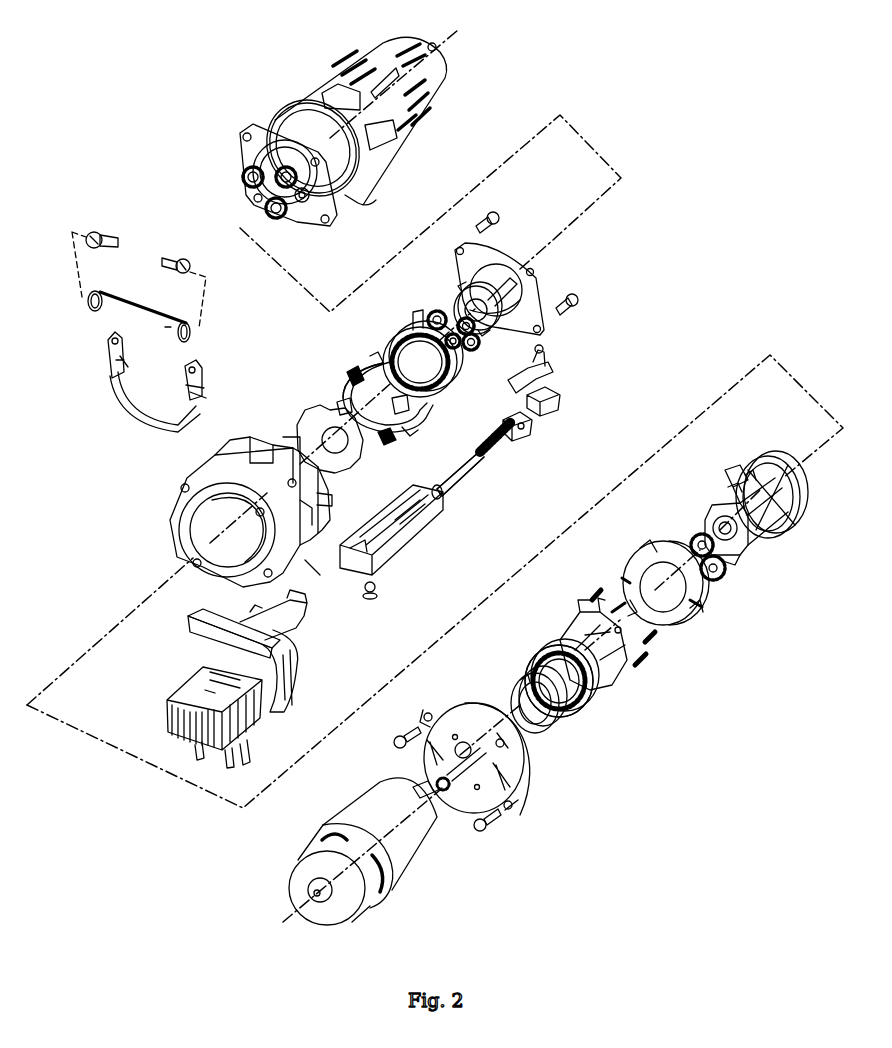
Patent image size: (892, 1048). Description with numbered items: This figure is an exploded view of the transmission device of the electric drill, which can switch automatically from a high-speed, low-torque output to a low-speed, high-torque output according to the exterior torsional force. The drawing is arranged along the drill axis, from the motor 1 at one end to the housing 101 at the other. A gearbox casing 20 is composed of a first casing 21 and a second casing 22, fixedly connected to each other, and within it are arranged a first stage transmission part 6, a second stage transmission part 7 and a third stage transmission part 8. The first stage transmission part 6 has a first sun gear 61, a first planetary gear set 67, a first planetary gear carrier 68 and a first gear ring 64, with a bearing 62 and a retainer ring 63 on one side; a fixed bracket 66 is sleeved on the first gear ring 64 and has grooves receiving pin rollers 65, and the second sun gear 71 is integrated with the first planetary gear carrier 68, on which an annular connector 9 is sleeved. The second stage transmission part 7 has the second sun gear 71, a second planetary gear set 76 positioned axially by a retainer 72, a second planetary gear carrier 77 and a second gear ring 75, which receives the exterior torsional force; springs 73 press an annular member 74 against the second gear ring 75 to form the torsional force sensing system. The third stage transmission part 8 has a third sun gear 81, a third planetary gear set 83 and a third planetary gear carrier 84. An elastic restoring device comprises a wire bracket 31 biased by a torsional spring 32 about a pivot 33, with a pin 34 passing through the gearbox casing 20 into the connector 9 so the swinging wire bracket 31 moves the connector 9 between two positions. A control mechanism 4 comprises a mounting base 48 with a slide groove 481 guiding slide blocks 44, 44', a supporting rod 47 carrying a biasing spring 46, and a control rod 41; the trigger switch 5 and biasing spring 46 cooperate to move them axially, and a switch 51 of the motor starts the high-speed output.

The housing 101 is at (350, 63).
The third stage transmission part 8 is at (222, 140).
The third planetary gear set 83 is at (243, 180).
The third planetary gear carrier 84 is at (302, 202).
The pivot 33 is at (72, 232).
The torsional spring 32 is at (88, 297).
The wire bracket 31 is at (127, 400).
The pin 34 is at (188, 390).
The second casing 22 is at (228, 478).
The gearbox casing 20 is at (167, 520).
The retainer 72 is at (312, 420).
The springs 73 is at (348, 378).
The annular member 74 is at (368, 362).
The second gear ring 75 is at (400, 340).
The second planetary gear set 76 is at (437, 312).
The second planetary gear carrier 77 is at (474, 292).
The third sun gear 81 is at (522, 293).
The second stage transmission part 7 is at (375, 333).
The control rod 41 is at (508, 381).
The slide block 44 is at (562, 414).
The slide block 44' is at (538, 437).
The biasing spring 46 is at (501, 447).
The supporting rod 47 is at (457, 478).
The control mechanism 4 is at (545, 475).
The slide groove 481 is at (418, 503).
The mounting base 48 is at (407, 535).
The trigger switch 5 is at (295, 668).
The switch of the motor 51 is at (267, 693).
The motor 1 is at (407, 857).
The first casing 21 is at (520, 770).
The first sun gear 61 is at (445, 790).
The bearing 62 is at (548, 721).
The retainer ring 63 is at (588, 704).
The first gear ring 64 is at (618, 685).
The pin rollers 65 is at (648, 662).
The fixed bracket 66 is at (692, 620).
The first planetary gear set 67 is at (719, 580).
The first planetary gear carrier 68 is at (750, 538).
The second sun gear 71 is at (740, 470).
The annular connector 9 is at (792, 533).
The first stage transmission part 6 is at (667, 712).